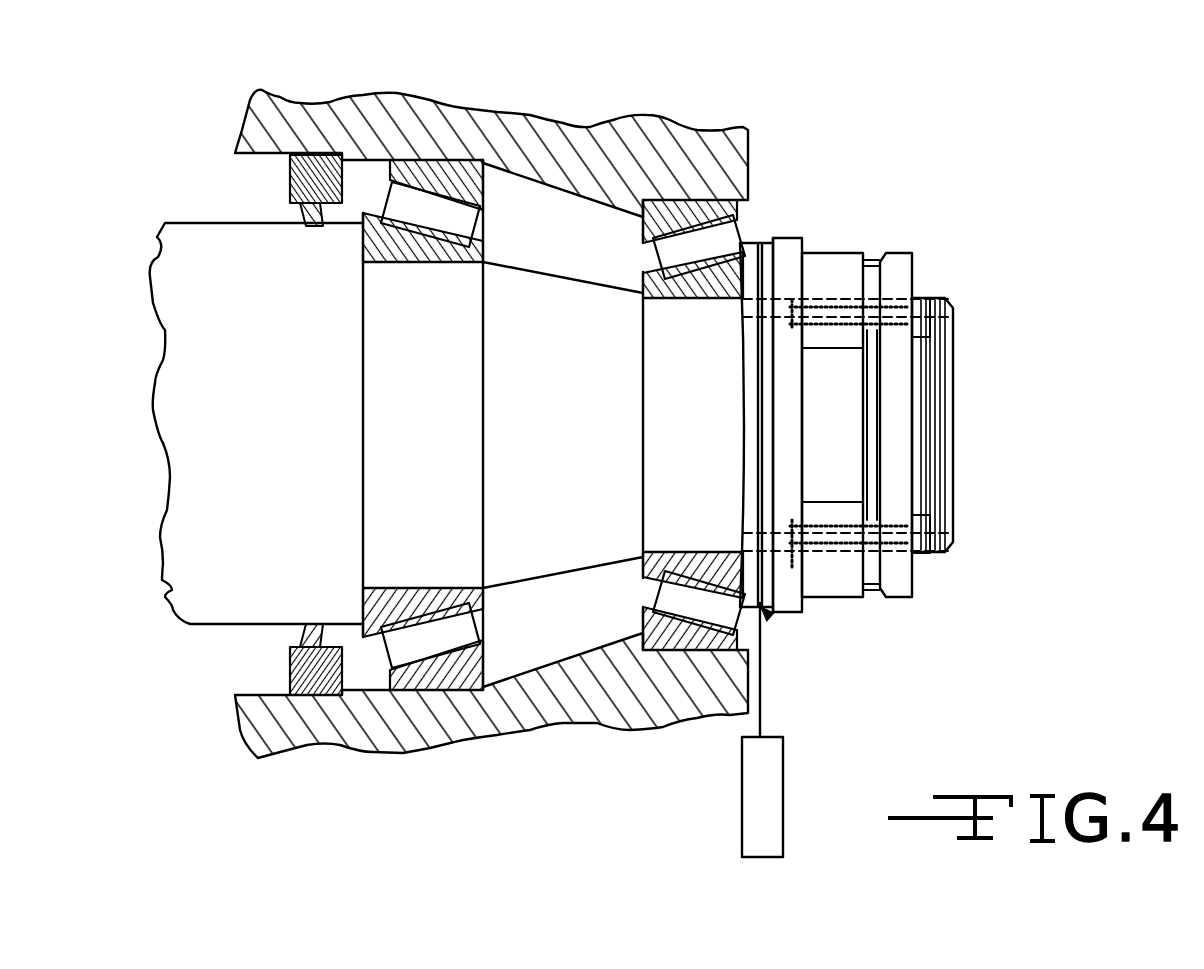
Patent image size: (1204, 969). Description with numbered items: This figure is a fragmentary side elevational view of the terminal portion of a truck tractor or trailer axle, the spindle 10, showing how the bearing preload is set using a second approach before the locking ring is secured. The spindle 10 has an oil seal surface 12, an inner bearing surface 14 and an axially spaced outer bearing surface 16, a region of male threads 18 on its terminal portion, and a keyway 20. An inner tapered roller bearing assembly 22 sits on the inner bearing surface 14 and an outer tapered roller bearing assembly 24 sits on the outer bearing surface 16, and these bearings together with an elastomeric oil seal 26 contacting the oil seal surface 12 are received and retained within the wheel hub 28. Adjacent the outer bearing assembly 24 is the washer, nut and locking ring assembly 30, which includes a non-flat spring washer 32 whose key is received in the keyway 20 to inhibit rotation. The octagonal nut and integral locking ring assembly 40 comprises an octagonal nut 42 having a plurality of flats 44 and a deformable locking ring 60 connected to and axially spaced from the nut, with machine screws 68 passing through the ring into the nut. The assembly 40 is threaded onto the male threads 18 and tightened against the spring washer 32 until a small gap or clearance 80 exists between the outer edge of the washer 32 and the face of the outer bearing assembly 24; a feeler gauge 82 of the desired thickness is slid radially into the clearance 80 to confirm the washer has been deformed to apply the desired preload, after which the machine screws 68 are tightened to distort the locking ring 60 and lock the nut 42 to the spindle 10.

The spindle 10 is at (1044, 274).
The oil seal surface 12 is at (252, 630).
The inner bearing surface 14 is at (415, 587).
The outer bearing surface 16 is at (690, 550).
The male threads 18 is at (932, 415).
The keyway 20 is at (762, 278).
The inner tapered roller bearing assembly 22 is at (423, 213).
The outer tapered roller bearing assembly 24 is at (692, 248).
The elastomeric oil seal 26 is at (290, 188).
The wheel hub 28 is at (448, 118).
The washer, nut and locking ring assembly 30 is at (863, 130).
The non-flat spring washer 32 is at (770, 242).
The octagonal nut and integral locking ring assembly 40 is at (982, 200).
The octagonal nut 42 is at (835, 253).
The flats 44 is at (793, 603).
The deformable locking ring 60 is at (892, 253).
The machine screws 68 is at (917, 533).
The gap or clearance 80 is at (769, 615).
The feeler gauge 82 is at (763, 698).